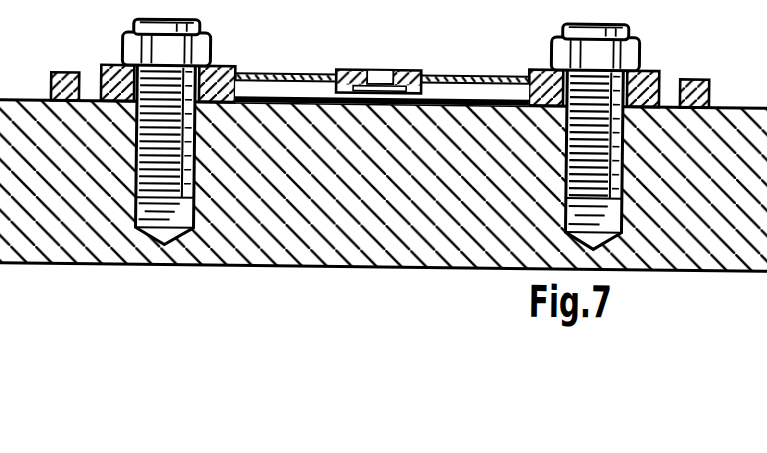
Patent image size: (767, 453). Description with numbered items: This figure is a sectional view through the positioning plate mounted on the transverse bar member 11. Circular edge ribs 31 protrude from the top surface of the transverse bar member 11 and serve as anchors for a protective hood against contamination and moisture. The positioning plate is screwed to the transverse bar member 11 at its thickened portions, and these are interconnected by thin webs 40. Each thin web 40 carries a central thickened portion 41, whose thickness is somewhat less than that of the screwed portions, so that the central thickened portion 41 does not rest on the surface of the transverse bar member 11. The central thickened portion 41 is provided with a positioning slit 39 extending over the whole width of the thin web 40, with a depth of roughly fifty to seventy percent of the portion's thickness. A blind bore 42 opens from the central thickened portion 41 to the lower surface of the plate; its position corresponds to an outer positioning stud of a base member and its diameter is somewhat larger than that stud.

The transverse bar member 11 is at (435, 240).
The circular edge rib 31 is at (63, 76).
The positioning slit 39 is at (383, 71).
The thin web 40 is at (478, 75).
The central thickened portion 41 is at (348, 70).
The blind bore 42 is at (370, 99).